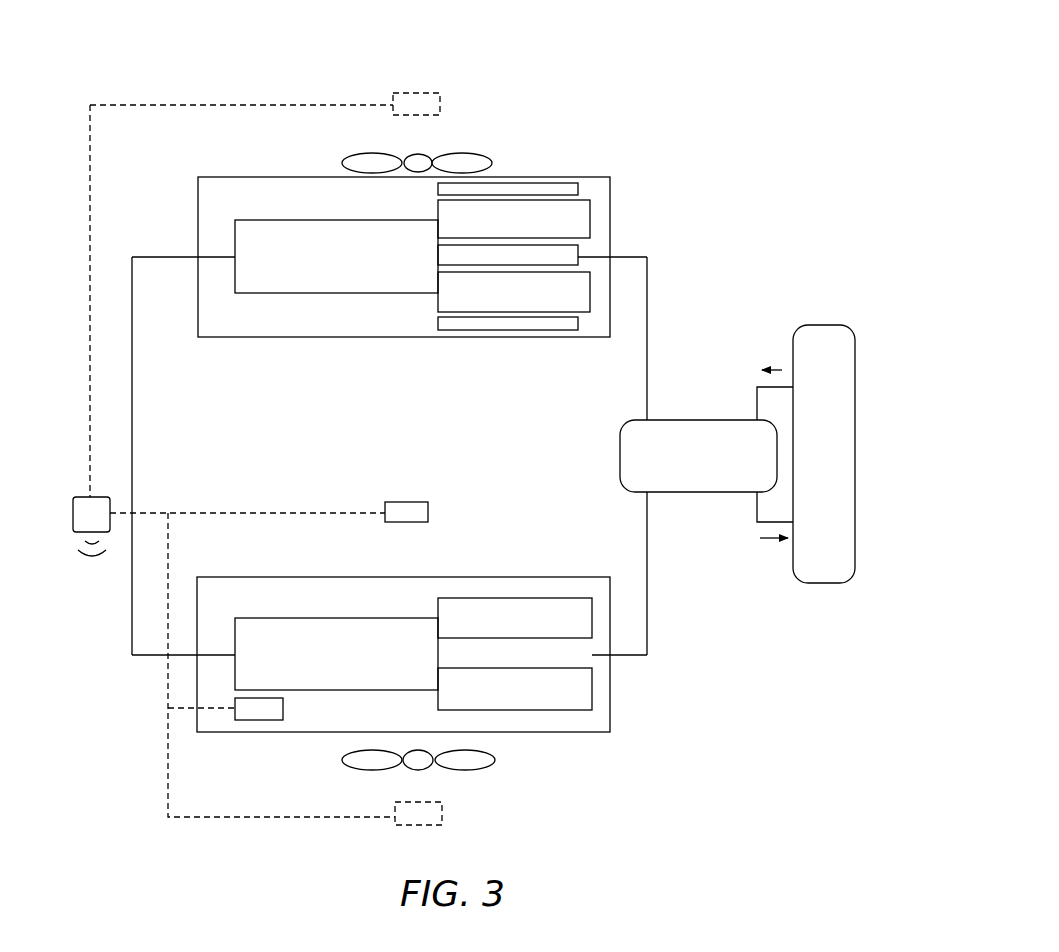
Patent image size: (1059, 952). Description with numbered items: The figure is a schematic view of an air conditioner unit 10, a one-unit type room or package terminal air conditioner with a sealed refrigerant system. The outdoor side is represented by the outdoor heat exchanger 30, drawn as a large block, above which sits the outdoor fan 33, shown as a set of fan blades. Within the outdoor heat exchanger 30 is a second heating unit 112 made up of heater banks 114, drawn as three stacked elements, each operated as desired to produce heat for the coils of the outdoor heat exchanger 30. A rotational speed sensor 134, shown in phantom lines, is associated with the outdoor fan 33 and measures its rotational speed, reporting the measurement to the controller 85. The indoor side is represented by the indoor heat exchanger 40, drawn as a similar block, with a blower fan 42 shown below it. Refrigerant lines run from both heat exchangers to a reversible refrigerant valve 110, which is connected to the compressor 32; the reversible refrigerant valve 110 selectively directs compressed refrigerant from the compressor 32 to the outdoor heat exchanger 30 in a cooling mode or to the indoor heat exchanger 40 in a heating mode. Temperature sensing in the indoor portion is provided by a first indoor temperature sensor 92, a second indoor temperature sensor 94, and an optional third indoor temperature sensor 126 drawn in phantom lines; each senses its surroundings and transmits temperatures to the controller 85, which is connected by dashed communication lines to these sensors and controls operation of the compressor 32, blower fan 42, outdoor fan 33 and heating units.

The air conditioner unit 10 is at (670, 63).
The outdoor heat exchanger 30 is at (415, 337).
The compressor 32 is at (808, 325).
The outdoor fan 33 is at (480, 152).
The indoor heat exchanger 40 is at (272, 577).
The blower fan 42 is at (490, 765).
The controller 85 is at (95, 497).
The first indoor temperature sensor 92 is at (247, 722).
The second indoor temperature sensor 94 is at (420, 501).
The reversible refrigerant valve 110 is at (677, 420).
The second heating unit 112 is at (643, 172).
The heater bank 114 is at (578, 323).
The third indoor temperature sensor 126 is at (442, 818).
The rotational speed sensor 134 is at (440, 105).